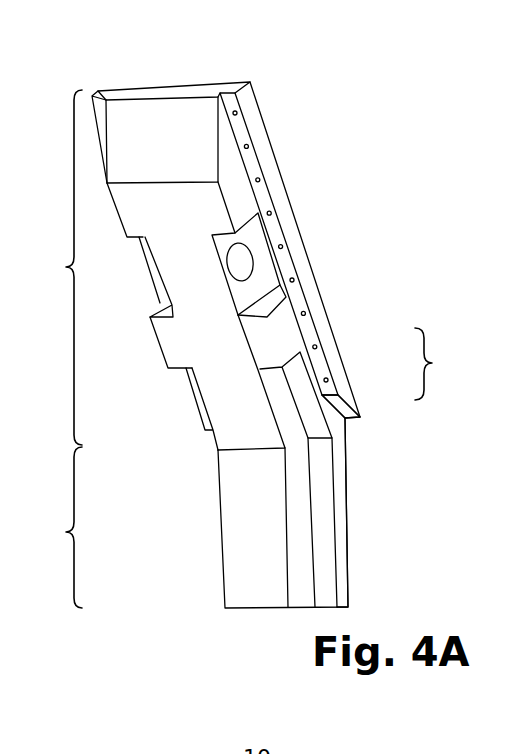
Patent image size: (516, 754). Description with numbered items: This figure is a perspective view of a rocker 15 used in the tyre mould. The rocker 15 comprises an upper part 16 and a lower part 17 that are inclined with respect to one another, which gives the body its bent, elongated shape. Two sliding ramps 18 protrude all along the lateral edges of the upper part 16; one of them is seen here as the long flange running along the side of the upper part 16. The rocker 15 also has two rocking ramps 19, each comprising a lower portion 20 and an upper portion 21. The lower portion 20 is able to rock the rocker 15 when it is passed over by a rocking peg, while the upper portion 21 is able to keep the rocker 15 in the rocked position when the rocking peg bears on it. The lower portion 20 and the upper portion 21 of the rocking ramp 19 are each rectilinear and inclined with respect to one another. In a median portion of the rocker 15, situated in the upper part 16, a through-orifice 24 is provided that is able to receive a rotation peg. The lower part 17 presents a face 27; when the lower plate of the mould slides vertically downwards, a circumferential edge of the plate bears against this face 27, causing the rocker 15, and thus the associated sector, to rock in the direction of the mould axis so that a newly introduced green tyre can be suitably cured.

The rocker 15 is at (187, 75).
The upper part 16 is at (57, 267).
The lower part 17 is at (190, 513).
The sliding ramp 18 is at (109, 81).
The rocking ramp 19 is at (440, 364).
The lower portion 20 is at (350, 408).
The upper portion 21 is at (334, 378).
The through-orifice 24 is at (244, 266).
The face 27 is at (358, 516).